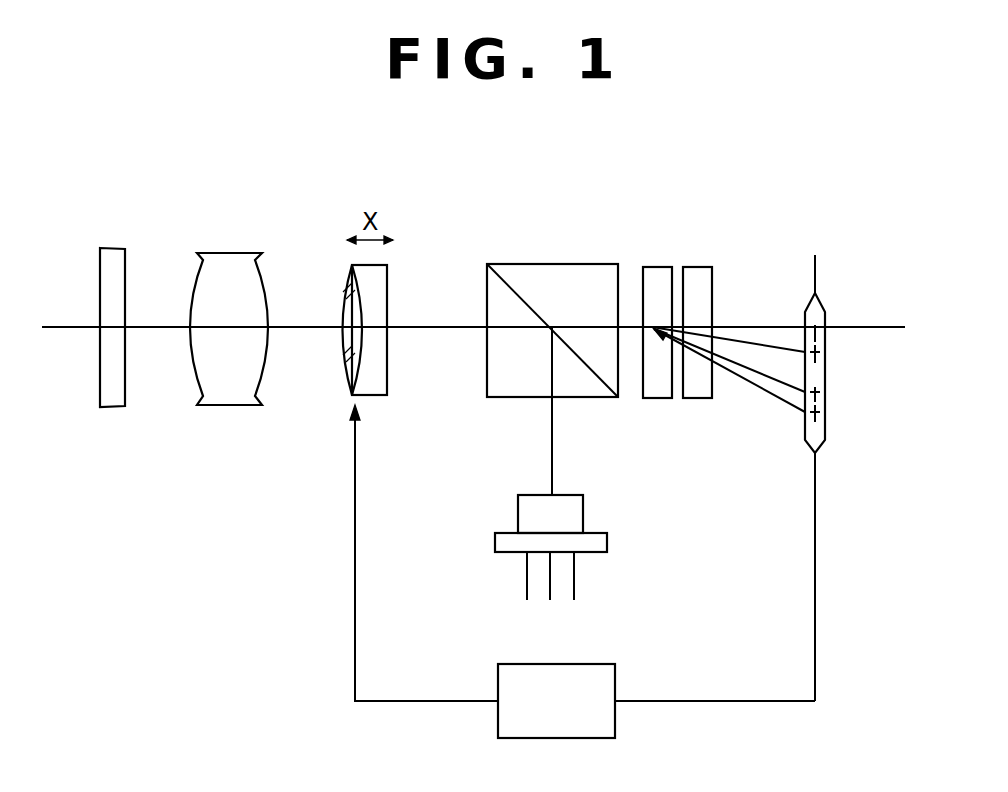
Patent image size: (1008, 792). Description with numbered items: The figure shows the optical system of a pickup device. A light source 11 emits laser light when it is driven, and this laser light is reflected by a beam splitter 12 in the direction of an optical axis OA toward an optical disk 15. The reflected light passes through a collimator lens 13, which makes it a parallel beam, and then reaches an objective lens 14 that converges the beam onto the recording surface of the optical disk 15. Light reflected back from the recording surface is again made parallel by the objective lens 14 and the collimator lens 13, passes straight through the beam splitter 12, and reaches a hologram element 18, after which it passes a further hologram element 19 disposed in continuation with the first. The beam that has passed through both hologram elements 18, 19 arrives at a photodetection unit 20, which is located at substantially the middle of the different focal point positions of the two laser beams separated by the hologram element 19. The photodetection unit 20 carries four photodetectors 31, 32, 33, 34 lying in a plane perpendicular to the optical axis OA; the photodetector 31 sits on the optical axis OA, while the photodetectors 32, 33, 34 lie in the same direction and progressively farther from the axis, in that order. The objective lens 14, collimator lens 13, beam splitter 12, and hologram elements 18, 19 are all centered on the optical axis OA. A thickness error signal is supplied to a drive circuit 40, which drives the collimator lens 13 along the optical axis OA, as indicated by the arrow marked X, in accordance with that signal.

The light source 11 is at (583, 510).
The beam splitter 12 is at (575, 264).
The collimator lens 13 is at (387, 285).
The objective lens 14 is at (234, 253).
The optical disk 15 is at (120, 248).
The hologram element 18 is at (660, 267).
The hologram element 19 is at (703, 267).
The photodetection unit 20 is at (822, 298).
The photodetector 31 is at (816, 328).
The photodetector 32 is at (817, 355).
The photodetector 33 is at (817, 398).
The photodetector 34 is at (817, 421).
The drive circuit 40 is at (615, 680).
The optical axis OA is at (300, 327).